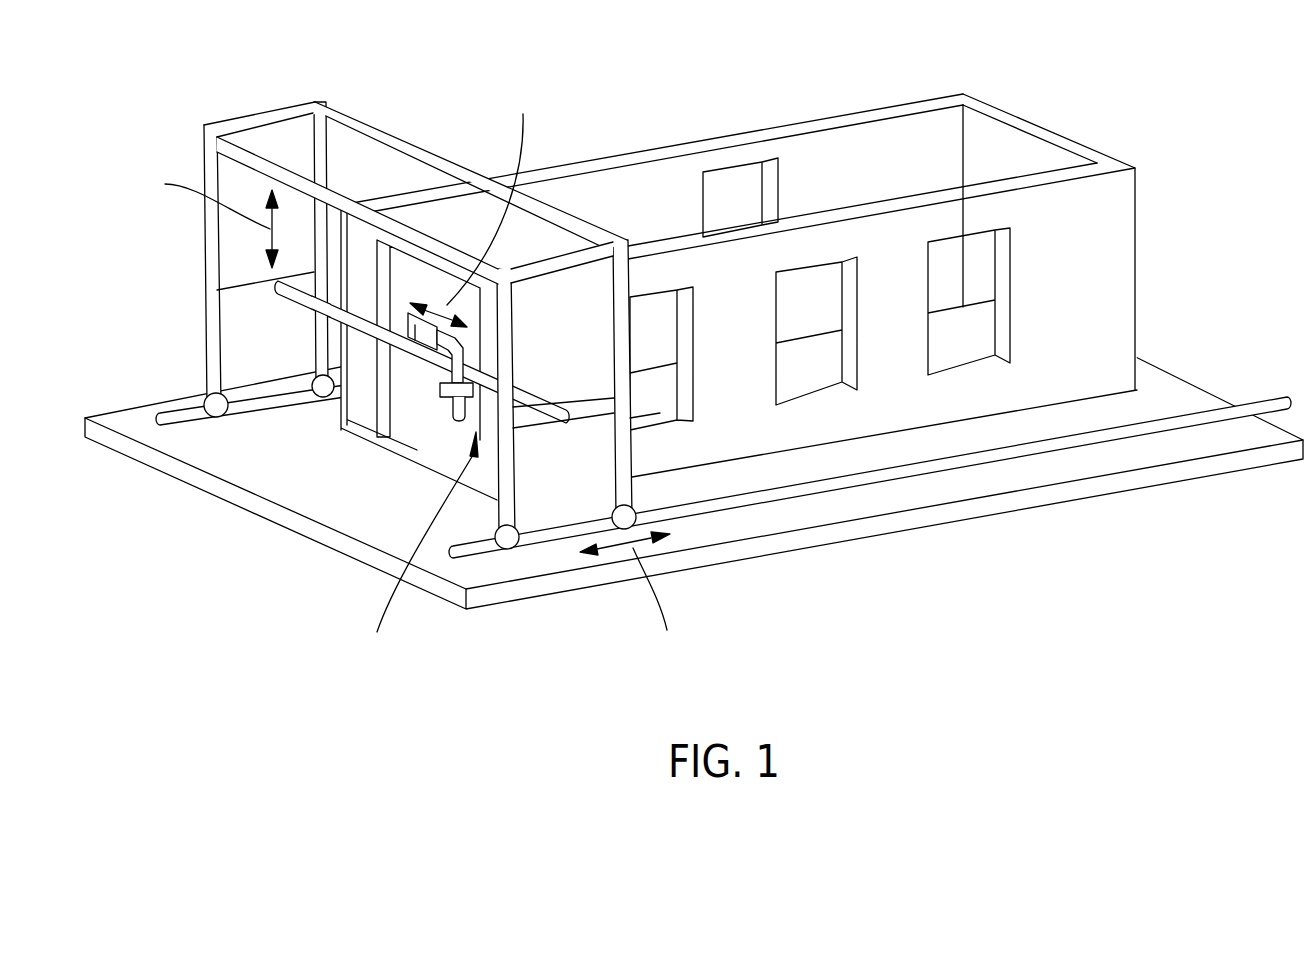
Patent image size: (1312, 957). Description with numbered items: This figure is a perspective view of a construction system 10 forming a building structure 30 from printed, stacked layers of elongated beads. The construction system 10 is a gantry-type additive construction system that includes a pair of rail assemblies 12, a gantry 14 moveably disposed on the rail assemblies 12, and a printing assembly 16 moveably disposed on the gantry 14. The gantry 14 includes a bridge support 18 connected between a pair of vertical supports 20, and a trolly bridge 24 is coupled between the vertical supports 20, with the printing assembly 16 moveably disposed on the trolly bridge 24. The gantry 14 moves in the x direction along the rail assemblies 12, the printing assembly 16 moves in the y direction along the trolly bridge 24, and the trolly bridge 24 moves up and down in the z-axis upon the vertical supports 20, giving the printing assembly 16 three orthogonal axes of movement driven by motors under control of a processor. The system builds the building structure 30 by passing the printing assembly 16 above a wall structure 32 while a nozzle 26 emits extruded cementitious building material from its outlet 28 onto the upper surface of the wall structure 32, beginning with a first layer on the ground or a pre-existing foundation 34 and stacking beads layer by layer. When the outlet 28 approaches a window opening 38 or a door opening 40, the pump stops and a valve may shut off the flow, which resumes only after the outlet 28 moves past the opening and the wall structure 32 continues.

The construction system 10 is at (694, 355).
The rail assemblies 12 is at (694, 478).
The gantry 14 is at (406, 277).
The printing assembly 16 is at (410, 330).
The bridge support 18 is at (397, 138).
The vertical supports 20 is at (204, 322).
The trolly bridge 24 is at (300, 305).
The nozzle 26 is at (445, 380).
The outlet 28 is at (458, 428).
The building structure 30 is at (807, 277).
The wall structure 32 is at (1137, 293).
The foundation 34 is at (1212, 392).
The window opening 38 is at (780, 192).
The door opening 40 is at (422, 550).